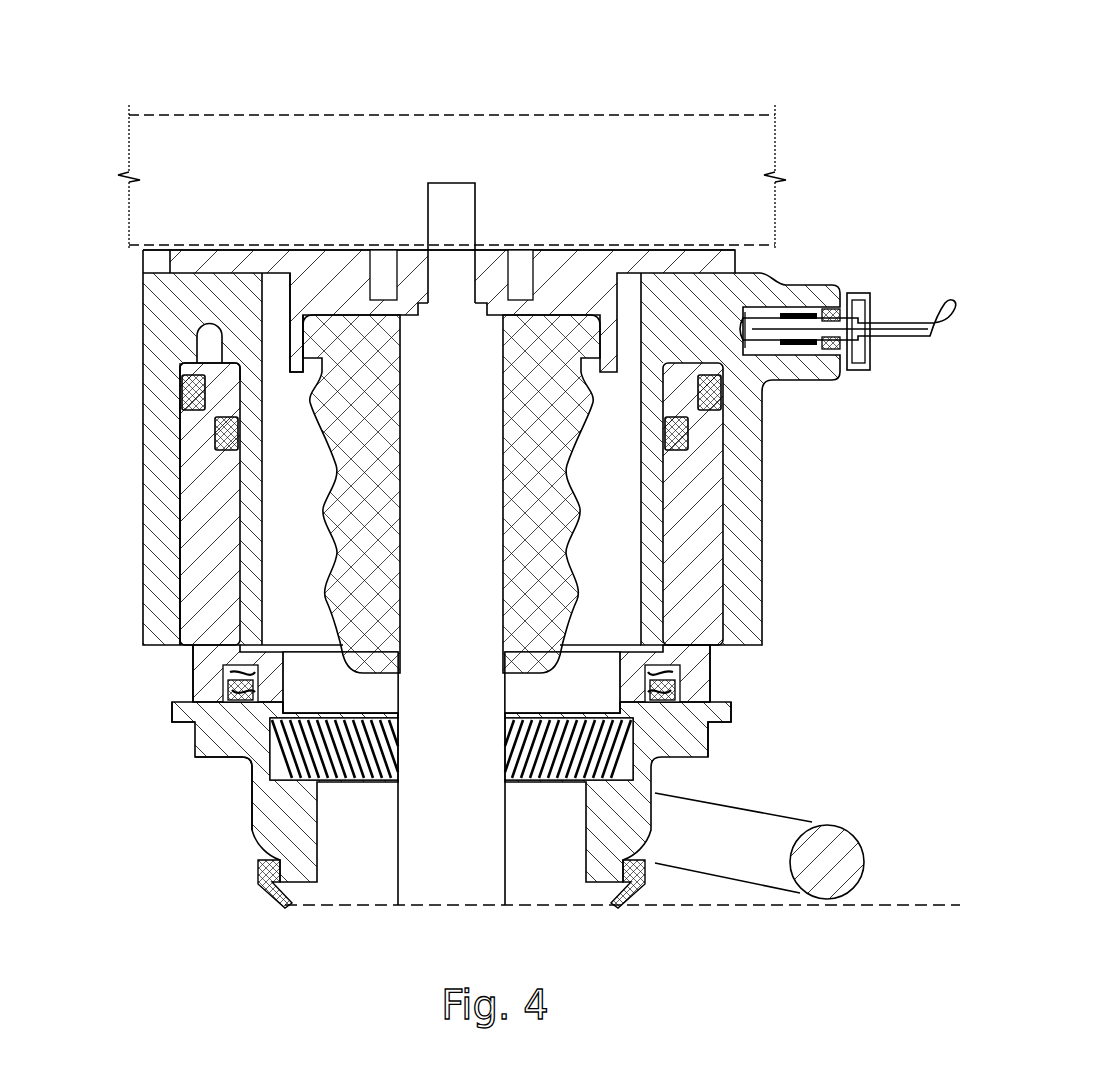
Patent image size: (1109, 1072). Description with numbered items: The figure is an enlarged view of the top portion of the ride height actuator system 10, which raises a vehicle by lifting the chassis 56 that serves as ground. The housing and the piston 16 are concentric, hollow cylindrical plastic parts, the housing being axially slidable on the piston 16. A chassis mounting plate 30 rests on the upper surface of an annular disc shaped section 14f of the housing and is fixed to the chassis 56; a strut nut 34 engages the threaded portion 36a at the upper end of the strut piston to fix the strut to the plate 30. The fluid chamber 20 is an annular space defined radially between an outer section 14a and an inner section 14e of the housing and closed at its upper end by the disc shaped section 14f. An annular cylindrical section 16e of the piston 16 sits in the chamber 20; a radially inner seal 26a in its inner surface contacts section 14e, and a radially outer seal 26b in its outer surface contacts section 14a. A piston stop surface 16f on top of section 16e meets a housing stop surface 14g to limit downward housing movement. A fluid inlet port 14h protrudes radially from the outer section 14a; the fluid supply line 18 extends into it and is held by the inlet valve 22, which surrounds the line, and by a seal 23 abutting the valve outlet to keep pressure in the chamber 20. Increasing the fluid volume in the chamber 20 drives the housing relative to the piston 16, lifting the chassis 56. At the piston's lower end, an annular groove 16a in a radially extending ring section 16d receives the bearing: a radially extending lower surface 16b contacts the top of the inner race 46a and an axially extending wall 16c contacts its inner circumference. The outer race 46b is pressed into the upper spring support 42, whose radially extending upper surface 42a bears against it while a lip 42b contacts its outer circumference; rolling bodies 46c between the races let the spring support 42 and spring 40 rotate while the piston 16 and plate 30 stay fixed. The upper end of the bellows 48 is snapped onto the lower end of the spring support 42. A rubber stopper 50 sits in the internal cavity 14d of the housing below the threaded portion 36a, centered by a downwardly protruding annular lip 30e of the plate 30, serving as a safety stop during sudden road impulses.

The ride height actuator system 10 is at (858, 178).
The outer section 14a is at (148, 540).
The internal cavity 14d is at (660, 538).
The inner section 14e is at (248, 545).
The annular disc shaped section 14f is at (213, 296).
The housing stop surface 14g is at (192, 356).
The fluid inlet port 14h is at (772, 290).
The piston 16 is at (212, 652).
The annular groove 16a is at (170, 664).
The radially extending lower surface 16b is at (680, 652).
The axially extending wall 16c is at (640, 668).
The radially extending ring section 16d is at (268, 667).
The annular cylindrical section 16e is at (213, 587).
The piston stop surface 16f is at (185, 379).
The fluid supply line 18 is at (895, 333).
The fluid chamber 20 is at (165, 490).
The inlet valve 22 is at (867, 303).
The seal 23 is at (753, 350).
The radially inner seal 26a is at (227, 432).
The radially outer seal 26b is at (192, 395).
The chassis mounting plate 30 is at (577, 270).
The downwardly protruding annular lip 30e is at (293, 330).
The strut nut 34 is at (497, 267).
The threaded portion 36a is at (450, 207).
The spring 40 is at (722, 862).
The upper spring support 42 is at (232, 805).
The radially extending upper surface 42a is at (230, 735).
The lip 42b is at (222, 690).
The inner race 46a is at (664, 672).
The outer race 46b is at (235, 690).
The rolling bodies 46c is at (672, 705).
The bellows 48 is at (258, 865).
The stopper 50 is at (360, 333).
The chassis 56 is at (688, 128).